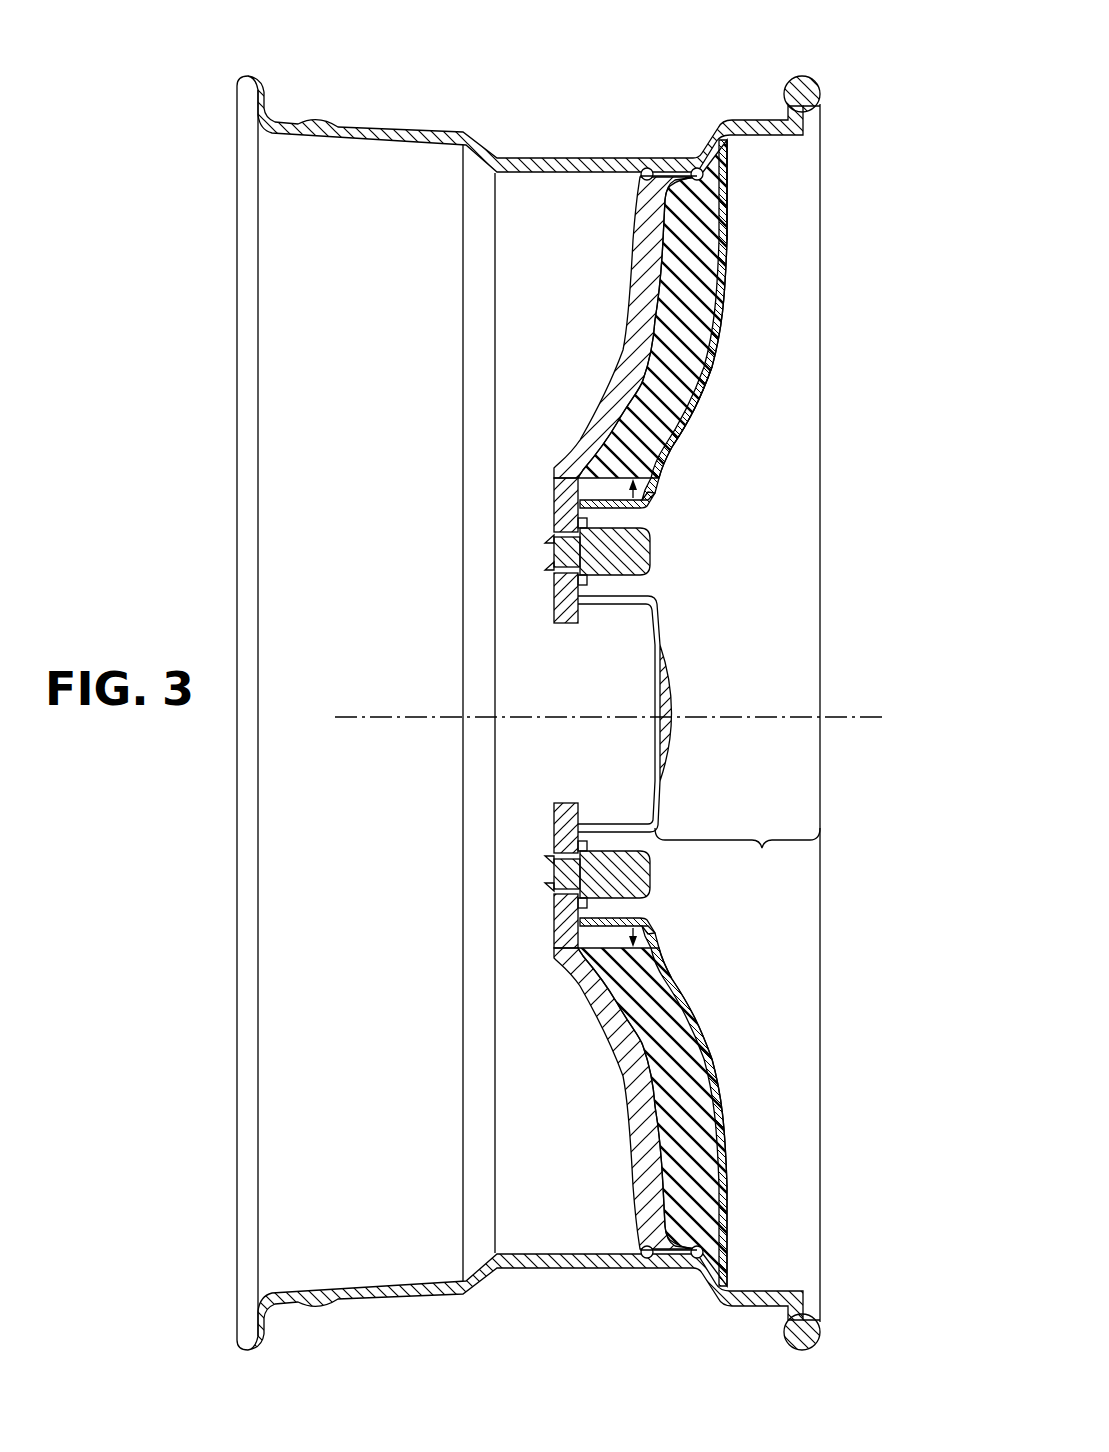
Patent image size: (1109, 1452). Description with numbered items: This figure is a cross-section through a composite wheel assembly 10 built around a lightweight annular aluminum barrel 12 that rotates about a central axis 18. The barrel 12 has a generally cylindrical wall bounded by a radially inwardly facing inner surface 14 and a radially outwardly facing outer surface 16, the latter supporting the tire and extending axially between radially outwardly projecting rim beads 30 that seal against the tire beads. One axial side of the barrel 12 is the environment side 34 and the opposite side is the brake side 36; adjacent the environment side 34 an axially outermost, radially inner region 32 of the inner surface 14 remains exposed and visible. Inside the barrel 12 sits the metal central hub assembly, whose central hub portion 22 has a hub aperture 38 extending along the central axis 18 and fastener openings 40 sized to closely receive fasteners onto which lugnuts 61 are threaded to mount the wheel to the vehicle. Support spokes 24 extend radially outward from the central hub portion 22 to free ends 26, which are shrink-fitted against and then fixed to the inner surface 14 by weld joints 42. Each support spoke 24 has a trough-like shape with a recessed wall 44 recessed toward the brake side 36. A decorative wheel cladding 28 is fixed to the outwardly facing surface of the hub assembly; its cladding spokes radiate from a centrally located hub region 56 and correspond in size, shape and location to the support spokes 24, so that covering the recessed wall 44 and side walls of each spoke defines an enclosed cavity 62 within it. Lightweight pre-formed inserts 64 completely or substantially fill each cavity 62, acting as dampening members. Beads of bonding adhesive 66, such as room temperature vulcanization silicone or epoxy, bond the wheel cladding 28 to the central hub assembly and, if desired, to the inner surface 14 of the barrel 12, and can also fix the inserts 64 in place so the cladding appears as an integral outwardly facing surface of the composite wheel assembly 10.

The composite wheel assembly 10 is at (858, 66).
The barrel 12 is at (805, 78).
The inner surface 14 is at (416, 143).
The outer surface 16 is at (428, 128).
The central axis 18 is at (880, 715).
The central hub portion 22 is at (553, 490).
The support spokes 24 is at (633, 257).
The free ends 26 is at (668, 160).
The wheel cladding 28 is at (700, 385).
The rim beads 30 is at (265, 86).
The inner region 32 is at (737, 853).
The environment side 34 is at (821, 108).
The brake side 36 is at (237, 110).
The hub aperture 38 is at (560, 622).
The fastener openings 40 is at (545, 548).
The weld joints 42 is at (645, 167).
The recessed wall 44 is at (668, 275).
The hub region 56 is at (662, 625).
The lugnuts 61 is at (651, 548).
The cavity 62 is at (650, 505).
The inserts 64 is at (695, 345).
The bonding adhesive 66 is at (725, 180).